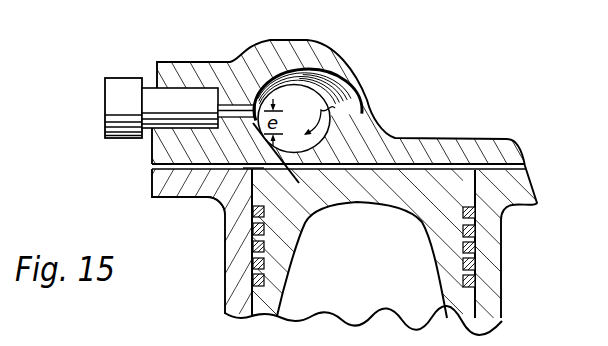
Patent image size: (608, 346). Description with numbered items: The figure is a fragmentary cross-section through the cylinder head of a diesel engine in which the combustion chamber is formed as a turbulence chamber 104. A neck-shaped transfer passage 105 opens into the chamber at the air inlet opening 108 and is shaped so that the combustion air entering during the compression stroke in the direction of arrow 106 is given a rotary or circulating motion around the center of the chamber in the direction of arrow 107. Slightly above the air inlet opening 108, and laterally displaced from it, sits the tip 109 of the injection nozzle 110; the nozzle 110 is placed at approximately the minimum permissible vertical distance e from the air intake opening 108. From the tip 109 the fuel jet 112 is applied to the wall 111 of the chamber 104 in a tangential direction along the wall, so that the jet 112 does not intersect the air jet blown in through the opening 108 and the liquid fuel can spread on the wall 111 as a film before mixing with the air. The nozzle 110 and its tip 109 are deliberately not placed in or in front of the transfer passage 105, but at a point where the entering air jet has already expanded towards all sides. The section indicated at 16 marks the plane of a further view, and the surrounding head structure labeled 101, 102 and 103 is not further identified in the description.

The section line 16- 16 is at (130, 106).
The piston skirt 101 is at (225, 294).
The piston rings 102 is at (250, 254).
The piston crown 103 is at (344, 179).
The turbulence chamber 104 is at (337, 100).
The transfer passage 105 is at (208, 193).
The arrow 106 is at (238, 206).
The arrow 107 is at (335, 108).
The air inlet opening 108 is at (165, 175).
The tip of the injection nozzle 109 is at (257, 115).
The injection nozzle 110 is at (162, 98).
The wall of the chamber 111 is at (282, 68).
The fuel jet 112 is at (289, 119).